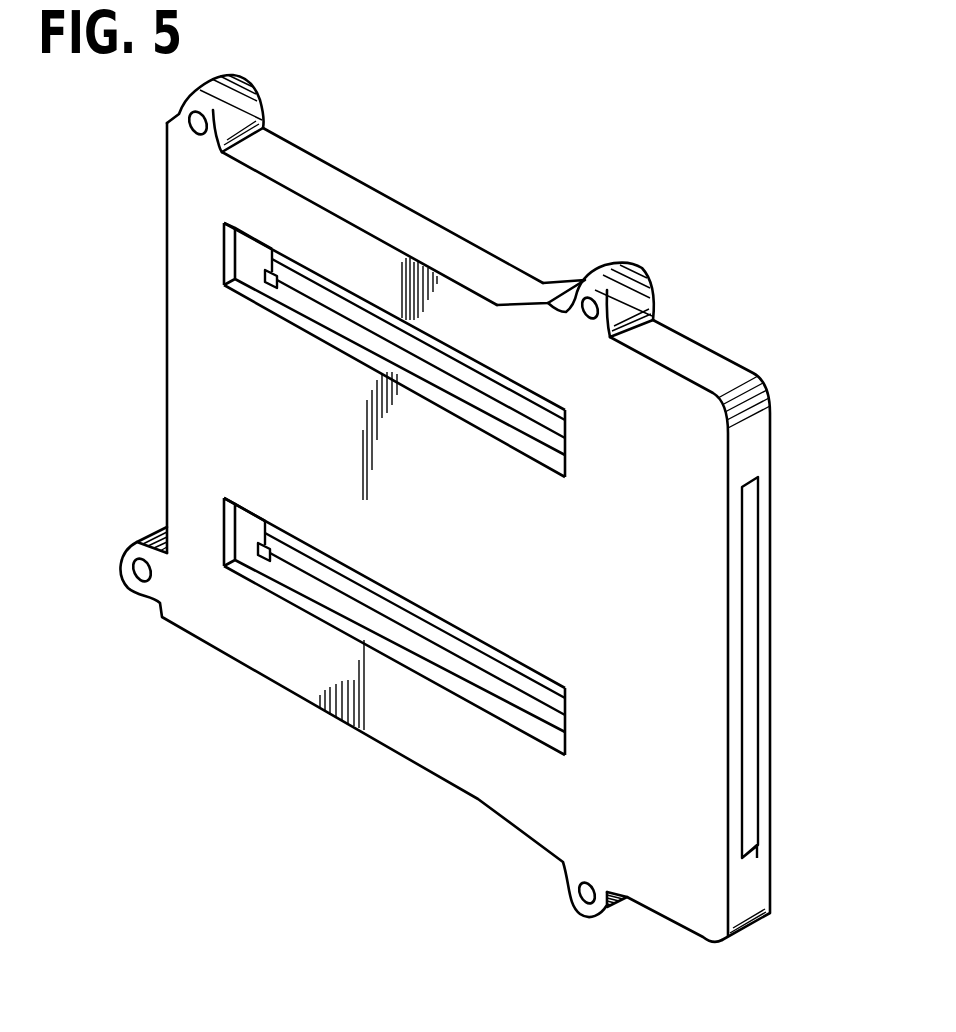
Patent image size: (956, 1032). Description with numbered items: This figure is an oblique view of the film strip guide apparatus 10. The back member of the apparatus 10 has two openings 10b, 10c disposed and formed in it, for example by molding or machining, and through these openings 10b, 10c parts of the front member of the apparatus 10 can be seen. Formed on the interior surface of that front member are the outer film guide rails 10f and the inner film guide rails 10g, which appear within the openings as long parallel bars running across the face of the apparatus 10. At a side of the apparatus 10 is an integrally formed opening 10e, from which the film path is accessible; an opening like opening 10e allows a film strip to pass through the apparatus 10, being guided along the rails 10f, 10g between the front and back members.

The film strip guide apparatus 10 is at (676, 481).
The opening 10b is at (225, 221).
The opening 10c is at (273, 623).
The opening 10e is at (758, 690).
The outer film guide rails 10f is at (442, 675).
The inner film guide rails 10g is at (300, 290).